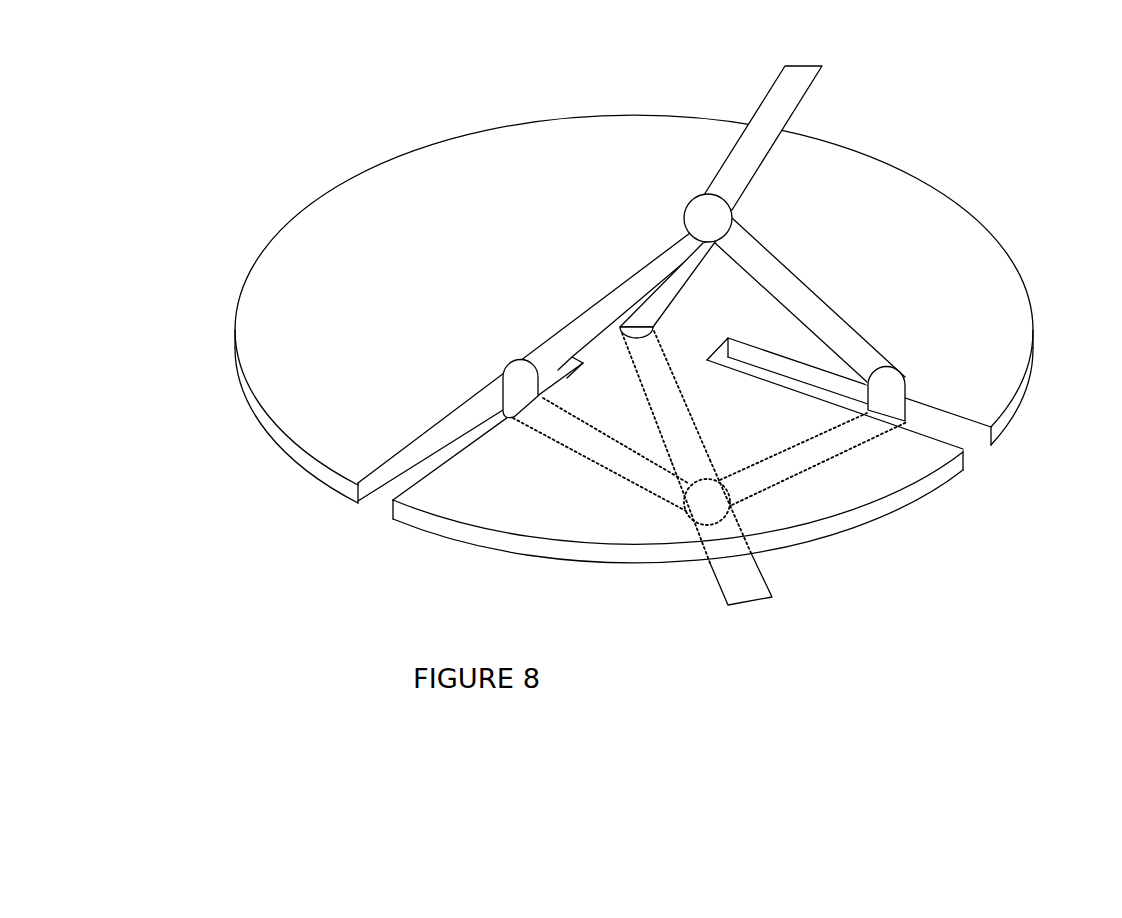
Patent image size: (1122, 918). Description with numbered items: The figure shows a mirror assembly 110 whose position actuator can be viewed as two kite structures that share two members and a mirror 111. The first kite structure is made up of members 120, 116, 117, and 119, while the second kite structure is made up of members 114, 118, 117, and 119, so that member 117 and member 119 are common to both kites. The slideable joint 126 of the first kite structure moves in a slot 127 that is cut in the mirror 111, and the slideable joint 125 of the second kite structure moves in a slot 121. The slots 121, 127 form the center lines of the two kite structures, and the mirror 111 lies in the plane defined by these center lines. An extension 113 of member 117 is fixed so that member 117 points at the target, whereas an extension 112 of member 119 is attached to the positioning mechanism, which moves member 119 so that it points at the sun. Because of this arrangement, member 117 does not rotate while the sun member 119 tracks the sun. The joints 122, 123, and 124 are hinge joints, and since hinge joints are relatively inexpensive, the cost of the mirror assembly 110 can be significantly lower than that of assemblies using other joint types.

The mirror assembly 110 is at (157, 122).
The mirror 111 is at (1017, 280).
The extension of member 119 112 is at (795, 95).
The extension of member 117 113 is at (760, 580).
The member 114 is at (813, 292).
The member 116 is at (583, 440).
The member 117 is at (665, 392).
The member 118 is at (800, 460).
The member 119 is at (669, 297).
The member 120 is at (593, 305).
The slot 121 is at (983, 456).
The hinge joint 122 is at (716, 219).
The hinge joint 123 is at (710, 500).
The hinge joint 124 is at (635, 340).
The slideable joint 125 is at (885, 383).
The slideable joint 126 is at (513, 380).
The slot 127 is at (367, 518).